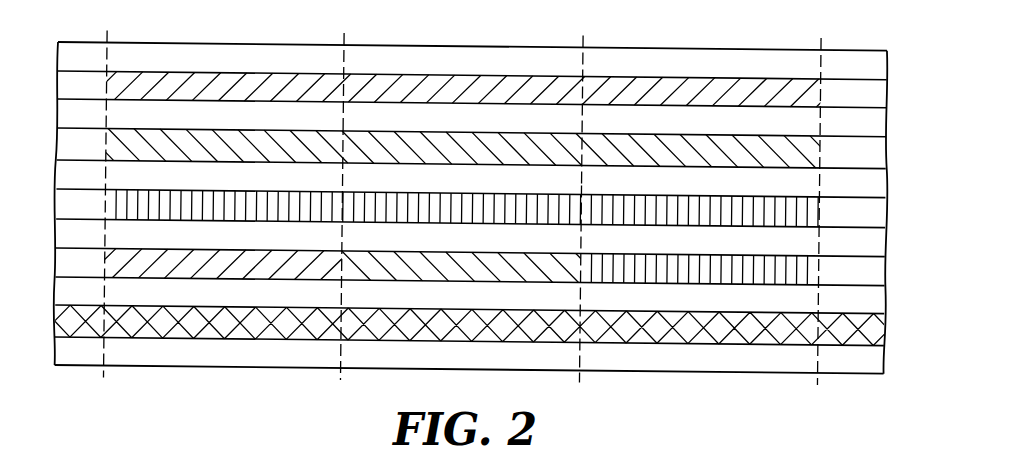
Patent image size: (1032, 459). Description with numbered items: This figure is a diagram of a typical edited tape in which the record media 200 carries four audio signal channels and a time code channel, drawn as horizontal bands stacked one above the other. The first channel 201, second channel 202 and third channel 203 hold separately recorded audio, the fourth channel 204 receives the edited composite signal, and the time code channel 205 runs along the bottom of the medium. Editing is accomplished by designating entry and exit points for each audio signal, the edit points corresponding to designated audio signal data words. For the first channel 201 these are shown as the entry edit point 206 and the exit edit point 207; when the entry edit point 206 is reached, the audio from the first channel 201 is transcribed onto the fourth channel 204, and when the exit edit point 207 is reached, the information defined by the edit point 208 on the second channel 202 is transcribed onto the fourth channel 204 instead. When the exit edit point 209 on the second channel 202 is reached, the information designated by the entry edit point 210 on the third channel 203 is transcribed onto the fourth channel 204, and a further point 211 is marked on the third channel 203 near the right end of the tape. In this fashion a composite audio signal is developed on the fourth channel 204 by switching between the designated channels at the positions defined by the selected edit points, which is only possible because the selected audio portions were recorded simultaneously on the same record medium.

The record media 200 is at (731, 41).
The first channel 201 is at (880, 85).
The second channel 202 is at (880, 144).
The third channel 203 is at (880, 204).
The fourth channel 204 is at (880, 262).
The time code channel 205 is at (880, 321).
The entry edit point 206 is at (108, 69).
The exit edit point 207 is at (344, 68).
The edit point 208 is at (346, 128).
The exit edit point 209 is at (583, 128).
The entry edit point 210 is at (588, 189).
The sixth boundary 211 is at (820, 189).